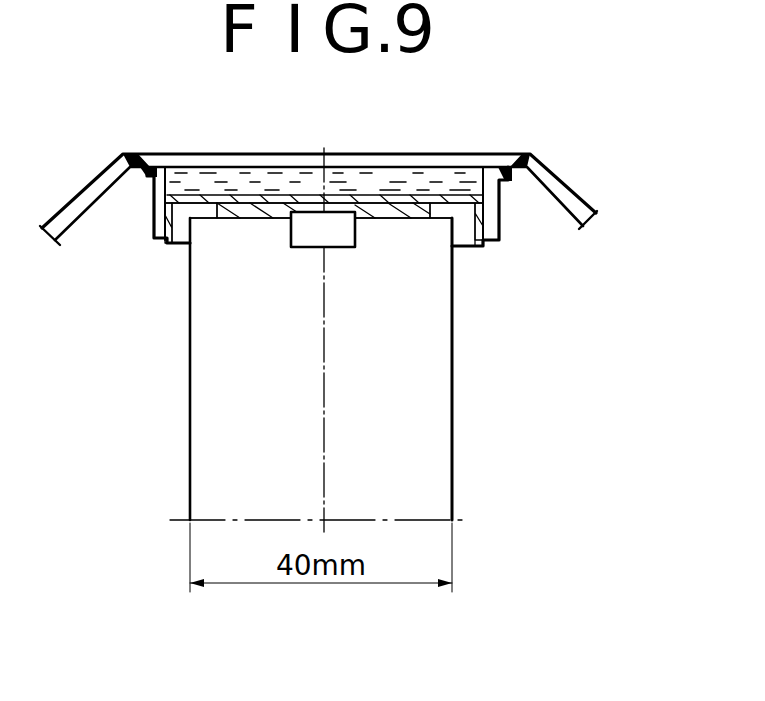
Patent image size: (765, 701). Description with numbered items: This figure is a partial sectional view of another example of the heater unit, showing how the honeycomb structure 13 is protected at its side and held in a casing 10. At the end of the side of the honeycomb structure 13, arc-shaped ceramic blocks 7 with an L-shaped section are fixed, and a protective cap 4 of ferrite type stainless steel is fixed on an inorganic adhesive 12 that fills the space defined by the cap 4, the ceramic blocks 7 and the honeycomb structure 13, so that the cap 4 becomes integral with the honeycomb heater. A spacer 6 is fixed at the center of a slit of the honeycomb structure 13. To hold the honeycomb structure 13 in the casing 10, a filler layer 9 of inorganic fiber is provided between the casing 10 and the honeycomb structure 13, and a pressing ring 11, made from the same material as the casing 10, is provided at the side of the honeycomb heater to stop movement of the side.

The cap 4 is at (229, 198).
The spacer 6 is at (289, 246).
The ceramic block 7 is at (463, 243).
The filler layer 9 is at (376, 180).
The casing 10 is at (437, 153).
The pressing ring 11 is at (502, 240).
The inorganic adhesive 12 is at (237, 220).
The honeycomb structure 13 is at (440, 365).